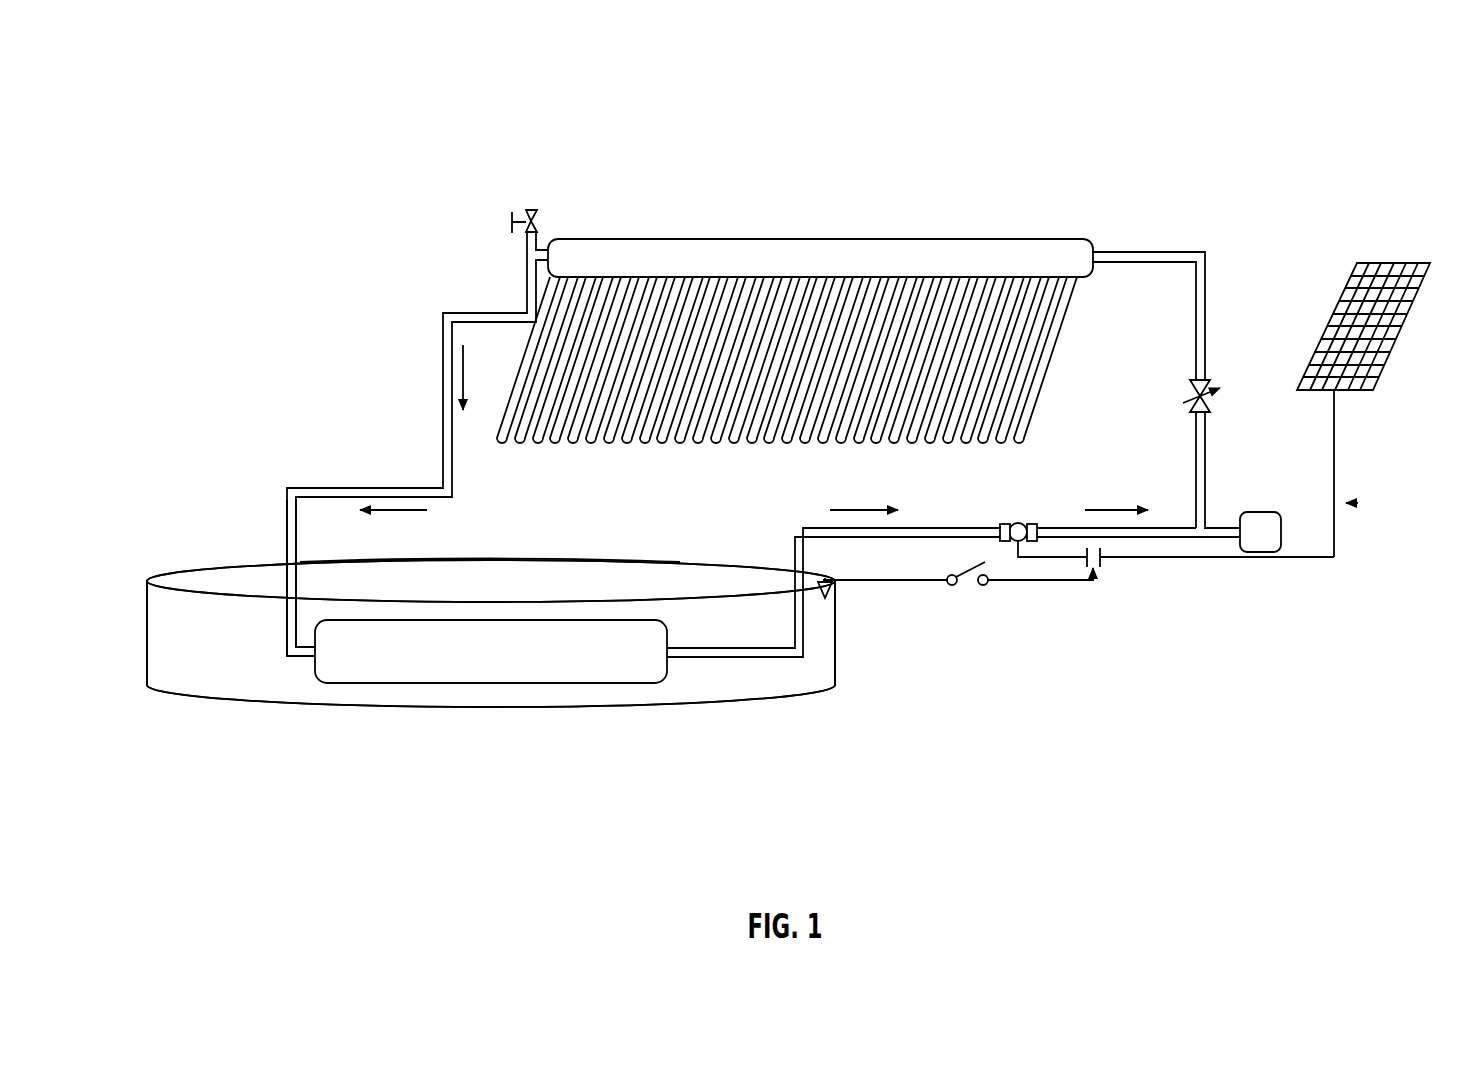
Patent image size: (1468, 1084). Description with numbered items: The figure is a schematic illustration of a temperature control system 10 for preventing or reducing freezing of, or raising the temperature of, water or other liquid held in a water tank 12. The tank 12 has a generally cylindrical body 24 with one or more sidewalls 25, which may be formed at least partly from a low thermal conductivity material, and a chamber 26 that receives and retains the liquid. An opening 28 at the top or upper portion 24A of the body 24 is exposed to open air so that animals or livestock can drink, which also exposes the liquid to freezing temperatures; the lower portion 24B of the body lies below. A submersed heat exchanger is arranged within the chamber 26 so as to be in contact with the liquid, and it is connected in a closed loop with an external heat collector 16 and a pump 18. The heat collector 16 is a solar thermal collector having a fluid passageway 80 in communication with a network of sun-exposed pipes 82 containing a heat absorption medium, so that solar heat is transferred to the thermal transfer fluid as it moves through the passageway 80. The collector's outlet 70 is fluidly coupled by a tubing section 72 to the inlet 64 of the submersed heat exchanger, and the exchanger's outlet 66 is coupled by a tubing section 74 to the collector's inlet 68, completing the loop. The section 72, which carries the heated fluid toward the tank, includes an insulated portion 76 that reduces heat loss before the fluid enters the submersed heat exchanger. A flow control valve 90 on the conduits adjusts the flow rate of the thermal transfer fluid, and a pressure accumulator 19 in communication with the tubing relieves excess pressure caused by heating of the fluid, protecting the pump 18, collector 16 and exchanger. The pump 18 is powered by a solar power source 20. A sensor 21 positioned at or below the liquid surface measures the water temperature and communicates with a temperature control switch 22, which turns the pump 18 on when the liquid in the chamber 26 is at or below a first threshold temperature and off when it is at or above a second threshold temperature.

The temperature control system 10 is at (1362, 93).
The water tank 12 is at (147, 580).
The external heat collector 16 is at (795, 339).
The pump 18 is at (1020, 522).
The pressure accumulator 19 is at (1275, 512).
The solar power source 20 is at (1405, 263).
The sensor 21 is at (835, 590).
The temperature control switch 22 is at (975, 590).
The body 24 is at (838, 680).
The upper portion 24A is at (684, 555).
The lower water region 24B is at (683, 705).
The sidewall 25 is at (160, 650).
The chamber 26 is at (576, 598).
The opening 28 is at (492, 572).
The inlet 64 is at (315, 655).
The outlet 66 is at (672, 650).
The inlet 68 is at (1097, 251).
The outlet 70 is at (535, 212).
The section 72 is at (443, 425).
The section 74 is at (1195, 318).
The insulated portion 76 is at (284, 620).
The fluid passageway 80 is at (622, 239).
The pipes 82 is at (500, 445).
The flow control valve 90 is at (1186, 411).